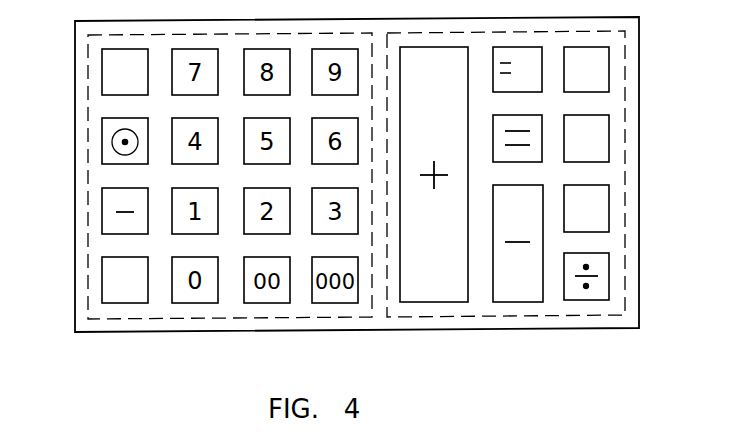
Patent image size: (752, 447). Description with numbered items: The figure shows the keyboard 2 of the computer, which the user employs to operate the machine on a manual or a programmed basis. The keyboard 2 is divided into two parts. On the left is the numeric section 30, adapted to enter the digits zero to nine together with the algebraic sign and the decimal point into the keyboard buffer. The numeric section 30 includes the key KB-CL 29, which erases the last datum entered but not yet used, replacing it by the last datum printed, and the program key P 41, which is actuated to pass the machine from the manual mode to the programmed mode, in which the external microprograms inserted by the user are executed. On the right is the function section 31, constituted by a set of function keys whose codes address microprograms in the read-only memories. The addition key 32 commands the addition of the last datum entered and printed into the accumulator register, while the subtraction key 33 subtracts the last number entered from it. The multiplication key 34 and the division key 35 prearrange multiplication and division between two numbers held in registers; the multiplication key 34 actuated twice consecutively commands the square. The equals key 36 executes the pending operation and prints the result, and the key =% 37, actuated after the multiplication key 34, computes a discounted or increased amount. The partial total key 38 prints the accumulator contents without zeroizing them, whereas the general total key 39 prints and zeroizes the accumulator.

The keyboard 2 is at (222, 332).
The key KB-CL 29 is at (102, 96).
The numeric section 30 is at (84, 161).
The function section 31 is at (640, 198).
The addition key 32 is at (432, 302).
The subtraction key 33 is at (524, 302).
The multiplication key 34 is at (609, 218).
The division key 35 is at (609, 278).
The equals key 36 is at (542, 150).
The key =% 37 is at (493, 81).
The partial total key 38 is at (609, 70).
The general total key 39 is at (609, 133).
The program key P 41 is at (102, 282).